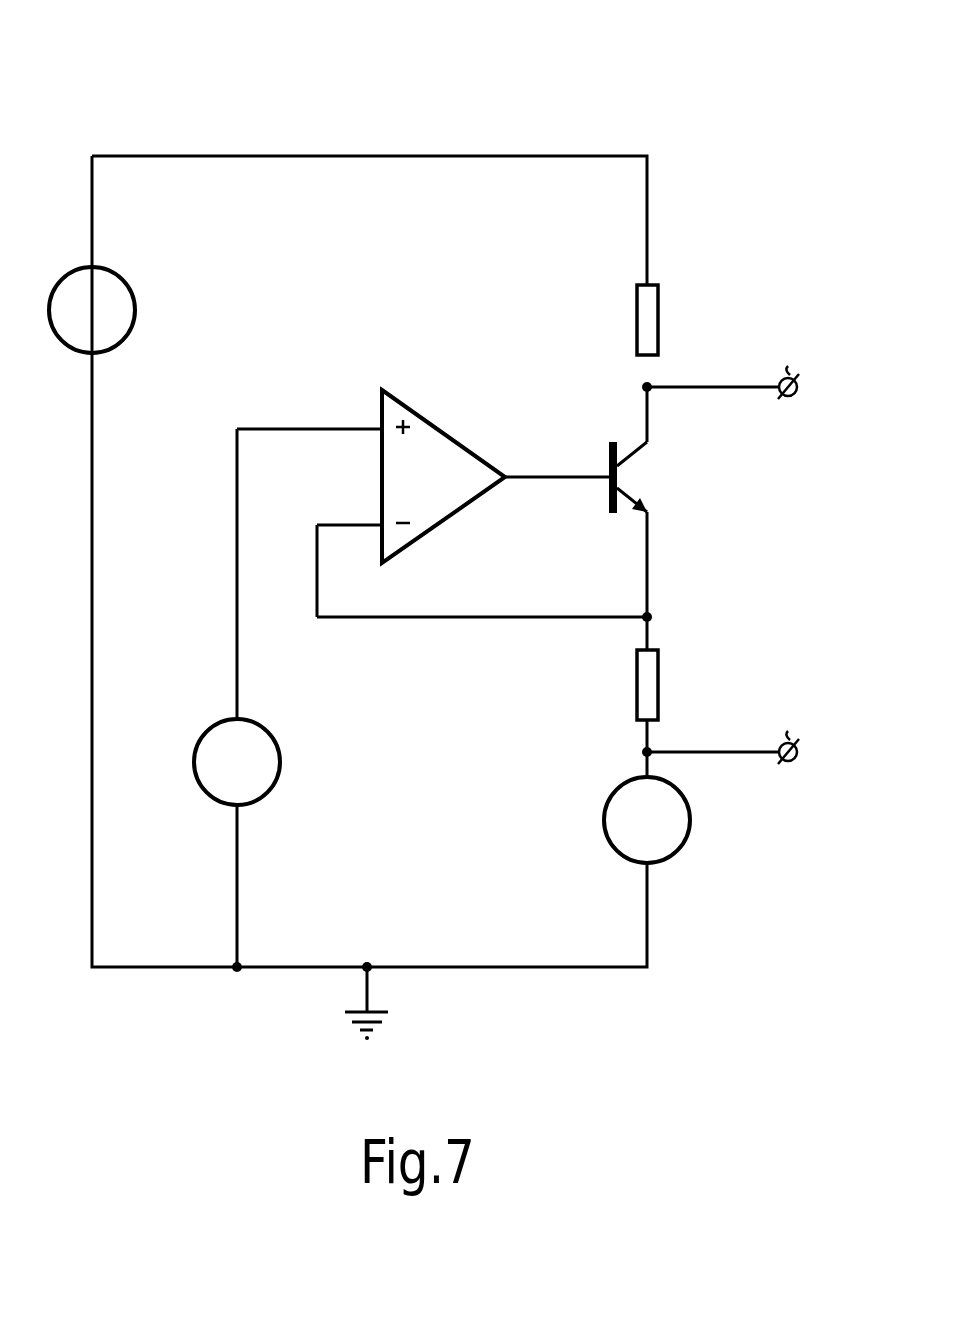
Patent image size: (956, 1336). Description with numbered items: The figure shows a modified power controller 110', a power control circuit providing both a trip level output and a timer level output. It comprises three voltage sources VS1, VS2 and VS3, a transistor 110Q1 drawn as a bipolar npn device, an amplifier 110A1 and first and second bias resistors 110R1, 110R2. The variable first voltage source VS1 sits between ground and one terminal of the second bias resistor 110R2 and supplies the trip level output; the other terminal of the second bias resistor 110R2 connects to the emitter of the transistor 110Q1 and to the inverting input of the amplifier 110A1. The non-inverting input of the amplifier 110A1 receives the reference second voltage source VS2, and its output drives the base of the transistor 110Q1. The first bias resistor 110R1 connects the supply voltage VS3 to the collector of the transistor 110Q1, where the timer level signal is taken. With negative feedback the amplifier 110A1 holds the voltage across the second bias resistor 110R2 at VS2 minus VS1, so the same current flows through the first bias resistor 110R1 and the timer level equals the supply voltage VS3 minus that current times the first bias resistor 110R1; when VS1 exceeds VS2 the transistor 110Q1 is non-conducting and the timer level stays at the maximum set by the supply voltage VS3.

The modified power controller 110' is at (449, 522).
The supply voltage VS3 is at (126, 316).
The second voltage source VS2 is at (272, 765).
The first voltage source VS1 is at (680, 821).
The first bias resistor 110R1 is at (705, 310).
The second bias resistor 110R2 is at (705, 676).
The transistor 110Q1 is at (633, 482).
The amplifier 110A1 is at (465, 455).